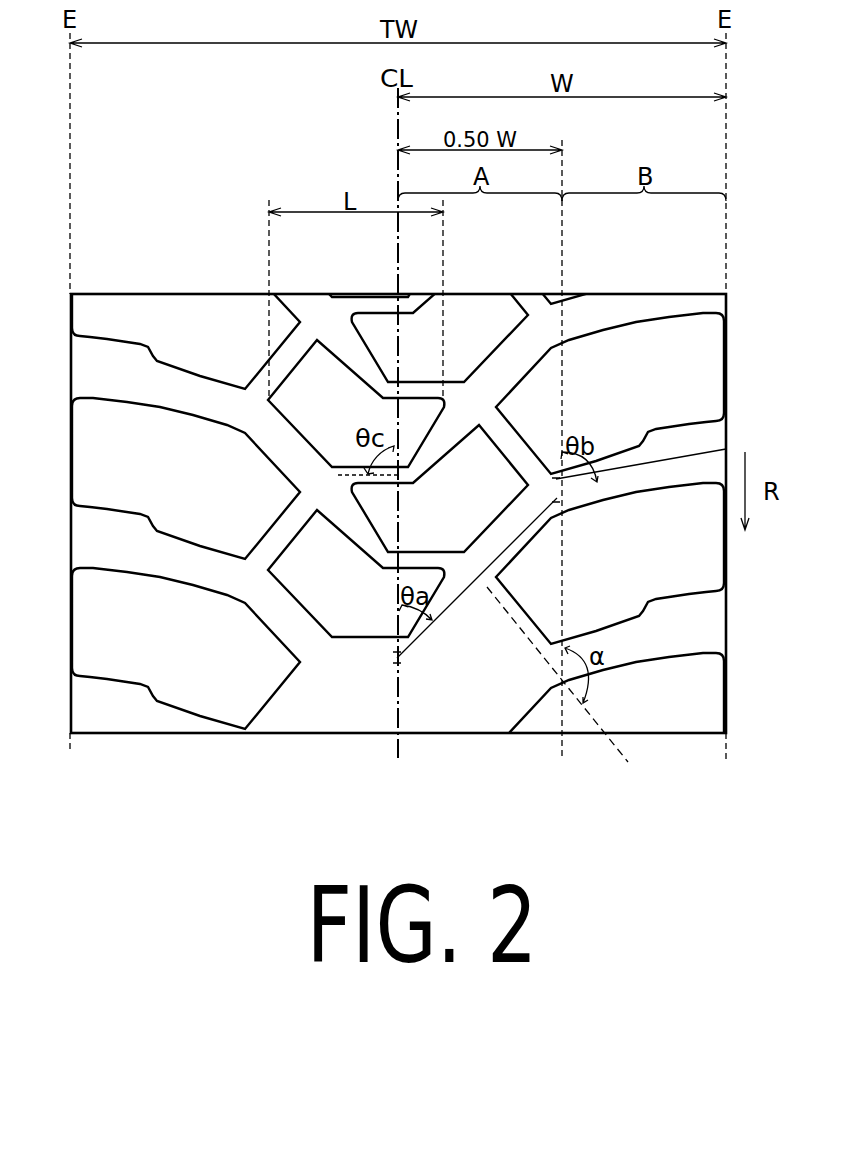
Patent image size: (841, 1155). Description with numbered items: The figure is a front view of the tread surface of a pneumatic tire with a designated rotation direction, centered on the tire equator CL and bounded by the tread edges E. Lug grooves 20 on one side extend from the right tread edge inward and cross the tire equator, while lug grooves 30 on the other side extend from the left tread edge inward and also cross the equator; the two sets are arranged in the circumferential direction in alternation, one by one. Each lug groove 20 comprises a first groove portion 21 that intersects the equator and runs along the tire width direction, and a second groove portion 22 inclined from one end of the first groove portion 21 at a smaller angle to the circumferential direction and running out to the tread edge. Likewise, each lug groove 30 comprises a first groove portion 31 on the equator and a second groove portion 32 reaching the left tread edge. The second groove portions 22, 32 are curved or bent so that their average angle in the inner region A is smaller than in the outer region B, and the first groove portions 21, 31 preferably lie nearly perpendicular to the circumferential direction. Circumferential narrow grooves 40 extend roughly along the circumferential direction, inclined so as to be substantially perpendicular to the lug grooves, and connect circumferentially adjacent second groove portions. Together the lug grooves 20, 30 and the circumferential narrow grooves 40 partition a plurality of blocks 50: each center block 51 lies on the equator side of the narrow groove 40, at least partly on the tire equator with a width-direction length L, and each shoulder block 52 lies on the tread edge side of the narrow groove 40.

The lug groove on one side 20 is at (496, 641).
The first groove portion 21 is at (372, 647).
The second groove portion 22 is at (658, 480).
The lug groove on the other side 30 is at (398, 402).
The first groove portion 31 is at (423, 563).
The second groove portion 32 is at (290, 452).
The circumferential narrow groove 40 is at (570, 300).
The block 50 is at (310, 609).
The center block 51 is at (475, 682).
The shoulder block 52 is at (127, 670).